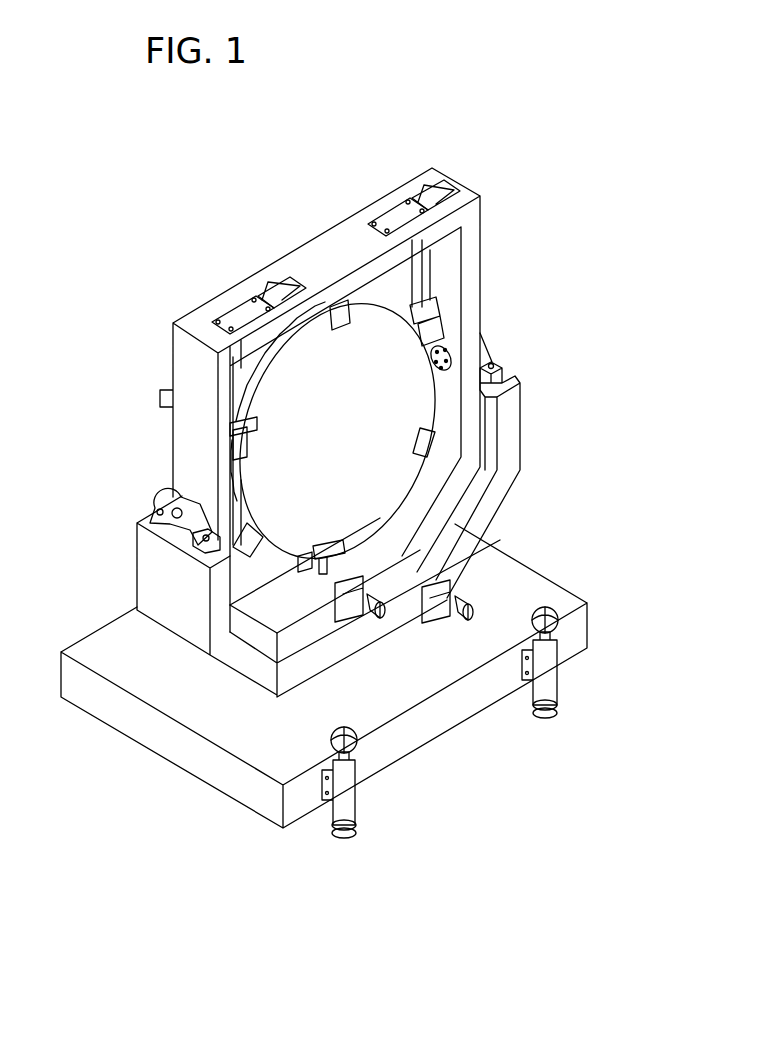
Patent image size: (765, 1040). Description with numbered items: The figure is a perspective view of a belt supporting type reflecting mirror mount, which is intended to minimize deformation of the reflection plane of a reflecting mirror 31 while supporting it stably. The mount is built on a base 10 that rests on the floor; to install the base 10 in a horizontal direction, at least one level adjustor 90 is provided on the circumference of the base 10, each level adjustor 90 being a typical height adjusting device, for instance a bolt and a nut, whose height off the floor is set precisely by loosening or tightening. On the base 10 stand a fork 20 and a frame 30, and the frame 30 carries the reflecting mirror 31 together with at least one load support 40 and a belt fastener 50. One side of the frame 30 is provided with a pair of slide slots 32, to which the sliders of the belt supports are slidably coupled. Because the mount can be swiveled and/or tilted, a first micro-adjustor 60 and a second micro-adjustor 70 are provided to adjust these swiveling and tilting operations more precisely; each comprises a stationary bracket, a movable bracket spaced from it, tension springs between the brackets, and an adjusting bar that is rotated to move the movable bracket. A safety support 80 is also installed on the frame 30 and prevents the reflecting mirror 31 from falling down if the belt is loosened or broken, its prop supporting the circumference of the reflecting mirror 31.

The base 10 is at (142, 738).
The fork 20 is at (138, 551).
The frame 30 is at (171, 352).
The reflecting mirror 31 is at (287, 350).
The slide slots 32 is at (374, 230).
The load support 40 is at (437, 433).
The belt fastener 50 is at (437, 303).
The first micro-adjustor 60 is at (466, 599).
The second micro-adjustor 70 is at (376, 594).
The safety support 80 is at (352, 547).
The level adjustor 90 is at (358, 803).